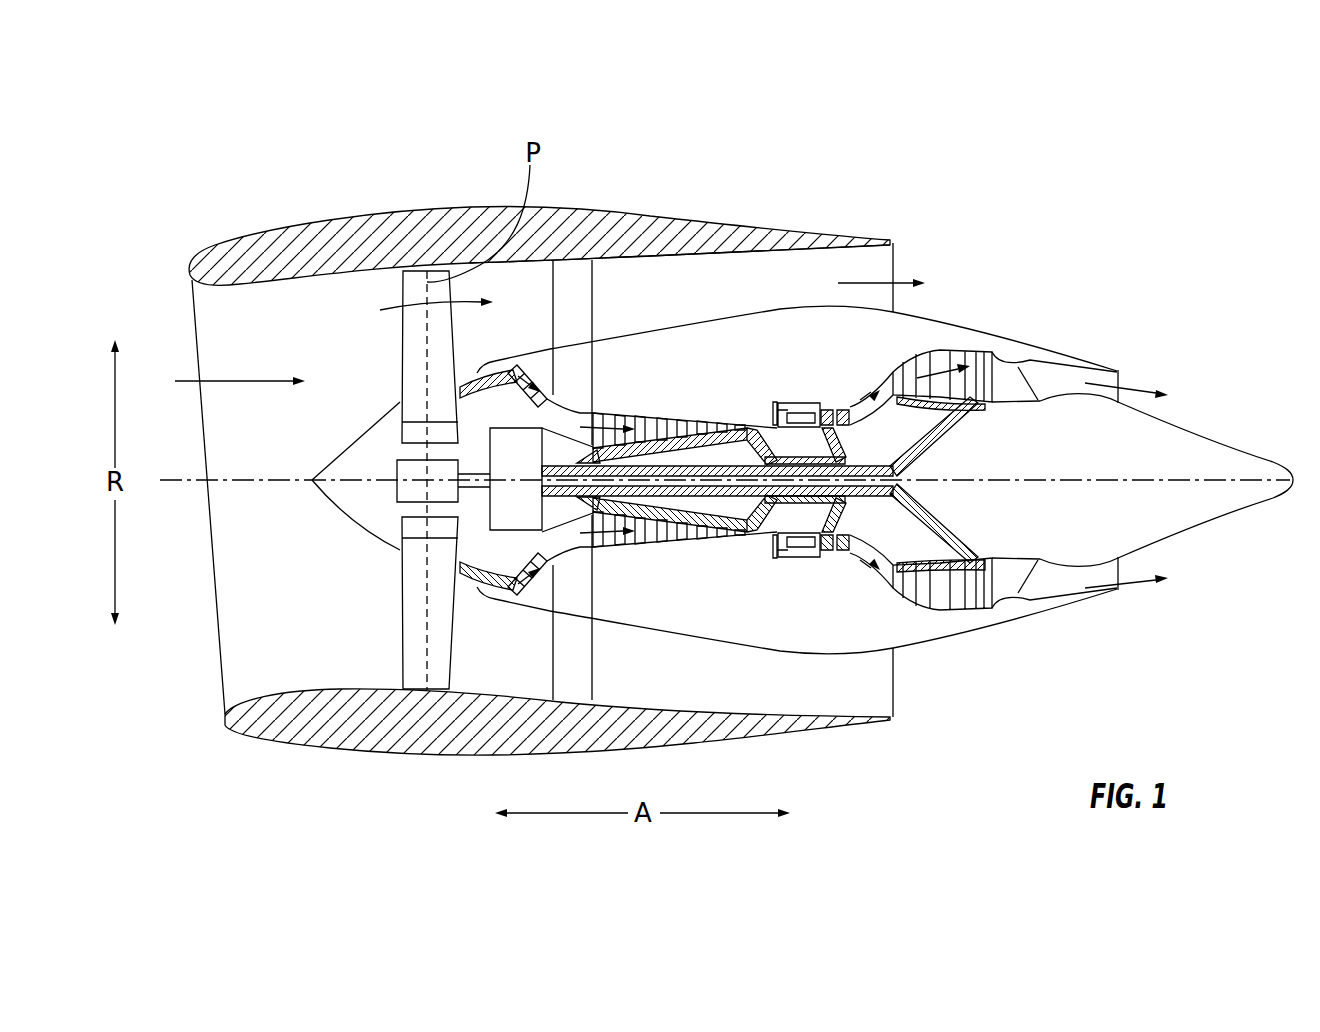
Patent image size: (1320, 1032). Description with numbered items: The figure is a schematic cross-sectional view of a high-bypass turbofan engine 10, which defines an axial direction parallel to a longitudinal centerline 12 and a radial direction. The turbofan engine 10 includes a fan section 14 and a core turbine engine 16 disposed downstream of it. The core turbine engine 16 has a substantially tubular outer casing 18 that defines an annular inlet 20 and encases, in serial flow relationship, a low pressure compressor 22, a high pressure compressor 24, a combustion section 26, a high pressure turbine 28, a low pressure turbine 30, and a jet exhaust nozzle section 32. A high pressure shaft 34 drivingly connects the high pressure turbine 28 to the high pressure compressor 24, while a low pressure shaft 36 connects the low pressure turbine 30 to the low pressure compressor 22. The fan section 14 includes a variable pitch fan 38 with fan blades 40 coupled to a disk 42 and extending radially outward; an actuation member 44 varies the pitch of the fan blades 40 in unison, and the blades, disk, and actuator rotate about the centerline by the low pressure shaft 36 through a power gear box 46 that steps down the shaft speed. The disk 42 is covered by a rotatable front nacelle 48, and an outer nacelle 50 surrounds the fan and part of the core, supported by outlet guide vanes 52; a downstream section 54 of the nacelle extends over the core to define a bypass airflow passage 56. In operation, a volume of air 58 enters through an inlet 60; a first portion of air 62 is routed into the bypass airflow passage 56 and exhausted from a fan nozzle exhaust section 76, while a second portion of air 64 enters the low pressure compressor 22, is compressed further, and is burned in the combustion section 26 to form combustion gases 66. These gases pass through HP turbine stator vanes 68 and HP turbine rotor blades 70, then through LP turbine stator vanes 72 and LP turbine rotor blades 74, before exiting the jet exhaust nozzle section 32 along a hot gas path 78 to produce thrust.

The turbofan engine 10 is at (1037, 222).
The longitudinal centerline 12 is at (1060, 478).
The fan section 14 is at (440, 178).
The core turbine engine 16 is at (757, 358).
The outer casing 18 is at (748, 646).
The annular inlet 20 is at (497, 593).
The low pressure compressor 22 is at (548, 557).
The high pressure compressor 24 is at (622, 537).
The combustion section 26 is at (792, 545).
The high pressure turbine 28 is at (933, 540).
The low pressure turbine 30 is at (977, 610).
The jet exhaust nozzle section 32 is at (1037, 590).
The high pressure shaft 34 is at (838, 433).
The low pressure shaft 36 is at (905, 447).
The variable pitch fan 38 is at (365, 533).
The fan blades 40 is at (400, 633).
The disk 42 is at (406, 432).
The actuation member 44 is at (395, 467).
The power gear box 46 is at (545, 430).
The front nacelle 48 is at (320, 496).
The outer nacelle 50 is at (445, 755).
The outlet guide vanes 52 is at (595, 282).
The downstream section 54 is at (834, 238).
The bypass airflow passage 56 is at (688, 303).
The volume of air 58 is at (242, 378).
The inlet 60 is at (224, 690).
The first portion of air 62 is at (417, 313).
The second portion of air 64 is at (480, 373).
The combustion gases 66 is at (833, 400).
The HP turbine stator vanes 68 is at (807, 545).
The HP turbine rotor blades 70 is at (825, 532).
The LP turbine stator vanes 72 is at (897, 597).
The LP turbine rotor blades 74 is at (913, 603).
The fan nozzle exhaust section 76 is at (883, 267).
The hot gas path 78 is at (884, 378).